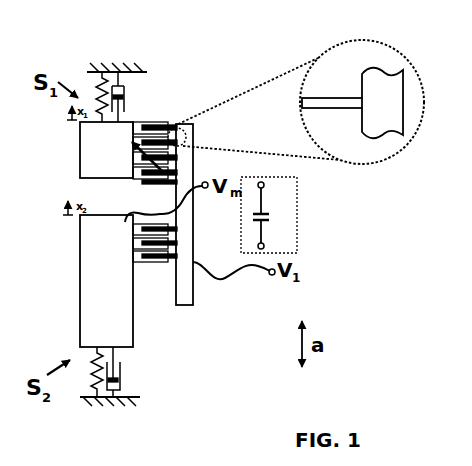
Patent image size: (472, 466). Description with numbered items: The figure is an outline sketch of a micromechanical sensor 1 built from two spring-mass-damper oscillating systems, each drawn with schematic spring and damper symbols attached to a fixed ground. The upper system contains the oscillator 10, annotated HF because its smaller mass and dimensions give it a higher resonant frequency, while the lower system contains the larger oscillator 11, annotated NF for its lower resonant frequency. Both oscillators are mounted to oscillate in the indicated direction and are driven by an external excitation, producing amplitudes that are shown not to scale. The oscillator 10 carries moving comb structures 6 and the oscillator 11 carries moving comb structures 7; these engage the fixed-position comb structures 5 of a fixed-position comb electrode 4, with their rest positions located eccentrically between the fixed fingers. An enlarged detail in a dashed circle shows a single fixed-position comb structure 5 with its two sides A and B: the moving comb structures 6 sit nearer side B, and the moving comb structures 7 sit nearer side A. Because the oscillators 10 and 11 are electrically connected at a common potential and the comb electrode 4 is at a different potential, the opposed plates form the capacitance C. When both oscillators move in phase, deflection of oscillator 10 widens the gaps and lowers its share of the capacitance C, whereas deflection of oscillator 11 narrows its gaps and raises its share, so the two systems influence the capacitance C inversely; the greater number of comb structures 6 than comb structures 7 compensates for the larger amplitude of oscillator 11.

The sensor 1 is at (236, 62).
The fixed-position comb electrode 4 is at (191, 290).
The fixed-position comb structures 5 is at (180, 126).
The moving comb structures 6 is at (140, 122).
The moving comb structures 7 is at (152, 263).
The oscillator 10 is at (80, 147).
The oscillator 11 is at (80, 297).
The side of the fixed-position comb structure A is at (355, 111).
The side of the fixed-position comb structure B is at (355, 96).
The capacitance C is at (269, 215).